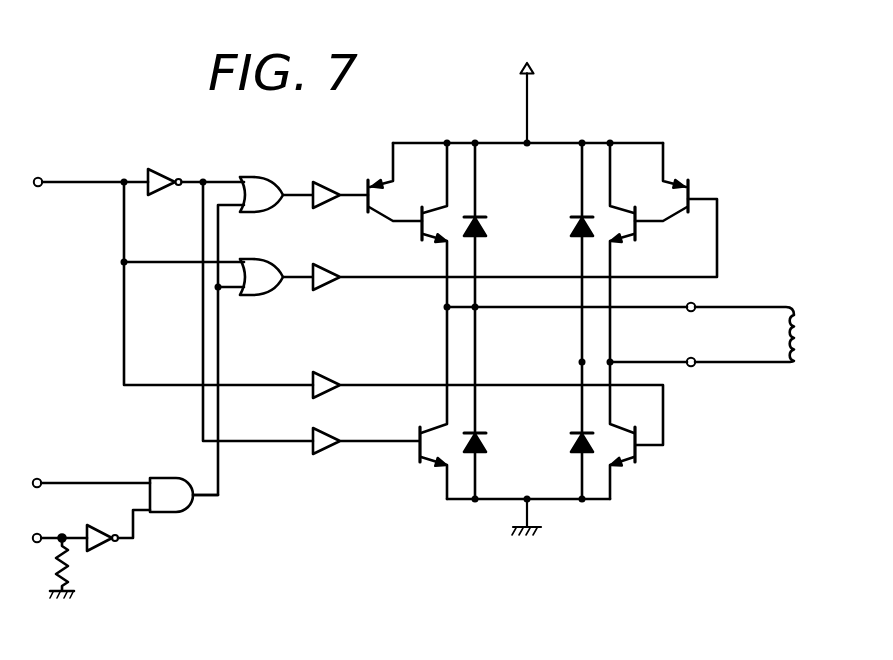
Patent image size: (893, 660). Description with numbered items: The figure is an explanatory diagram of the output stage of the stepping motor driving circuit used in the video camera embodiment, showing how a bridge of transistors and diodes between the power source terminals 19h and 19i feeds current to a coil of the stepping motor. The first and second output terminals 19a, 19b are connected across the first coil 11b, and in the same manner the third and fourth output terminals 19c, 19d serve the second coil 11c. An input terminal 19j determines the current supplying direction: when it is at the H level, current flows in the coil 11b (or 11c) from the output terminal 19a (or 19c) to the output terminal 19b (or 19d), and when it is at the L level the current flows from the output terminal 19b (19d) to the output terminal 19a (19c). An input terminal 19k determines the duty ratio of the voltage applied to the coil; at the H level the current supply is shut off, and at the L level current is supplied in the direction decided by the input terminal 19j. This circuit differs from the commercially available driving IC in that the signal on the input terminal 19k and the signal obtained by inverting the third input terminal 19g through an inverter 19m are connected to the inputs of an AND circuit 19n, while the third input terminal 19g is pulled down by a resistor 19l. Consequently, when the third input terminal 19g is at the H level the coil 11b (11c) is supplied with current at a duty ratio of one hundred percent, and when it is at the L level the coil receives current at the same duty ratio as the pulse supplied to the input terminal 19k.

The input terminal 19j is at (42, 173).
The input terminal 19k is at (37, 478).
The third input terminal 19g is at (36, 542).
The inverter 19m is at (103, 550).
The resistor 19l is at (70, 565).
The AND circuit 19n is at (176, 513).
The power source terminal 19h is at (535, 67).
The power source terminal 19i is at (545, 531).
The first output terminal 19a is at (627, 293).
The third output terminal 19c is at (694, 303).
The second output terminal 19b is at (711, 380).
The fourth output terminal 19d is at (694, 366).
The first coil 11b is at (776, 335).
The second coil 11c is at (799, 331).